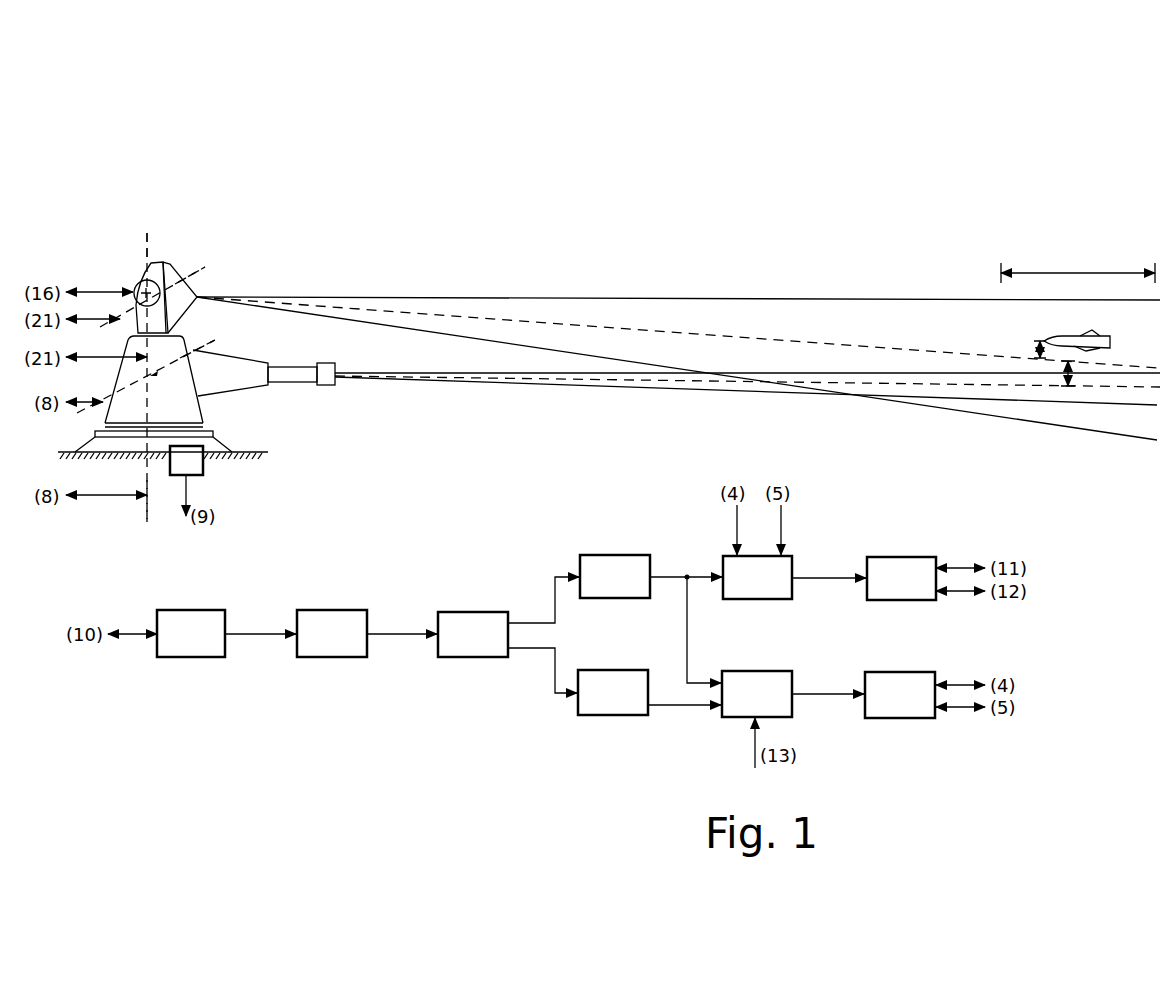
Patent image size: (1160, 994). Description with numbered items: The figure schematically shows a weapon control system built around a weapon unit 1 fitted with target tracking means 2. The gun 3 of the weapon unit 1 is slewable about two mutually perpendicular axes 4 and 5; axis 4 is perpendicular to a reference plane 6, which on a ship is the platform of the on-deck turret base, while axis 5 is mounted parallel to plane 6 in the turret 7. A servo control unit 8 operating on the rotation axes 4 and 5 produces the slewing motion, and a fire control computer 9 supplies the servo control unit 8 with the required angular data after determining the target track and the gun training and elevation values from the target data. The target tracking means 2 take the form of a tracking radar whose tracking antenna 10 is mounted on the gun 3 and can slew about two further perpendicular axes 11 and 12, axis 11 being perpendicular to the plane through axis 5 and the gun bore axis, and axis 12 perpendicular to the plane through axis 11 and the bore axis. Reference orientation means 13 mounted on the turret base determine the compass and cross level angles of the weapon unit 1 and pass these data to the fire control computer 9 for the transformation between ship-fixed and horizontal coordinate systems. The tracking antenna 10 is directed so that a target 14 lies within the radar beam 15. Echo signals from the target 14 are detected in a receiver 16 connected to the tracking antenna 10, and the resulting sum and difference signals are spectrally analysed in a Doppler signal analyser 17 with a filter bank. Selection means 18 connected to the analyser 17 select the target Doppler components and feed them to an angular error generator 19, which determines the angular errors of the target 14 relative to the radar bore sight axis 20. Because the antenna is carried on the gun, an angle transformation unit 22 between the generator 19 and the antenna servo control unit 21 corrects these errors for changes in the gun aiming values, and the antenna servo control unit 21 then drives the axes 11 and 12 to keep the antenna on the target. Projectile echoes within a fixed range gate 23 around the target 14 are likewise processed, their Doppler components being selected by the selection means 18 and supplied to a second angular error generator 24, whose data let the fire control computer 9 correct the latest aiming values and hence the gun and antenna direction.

The weapon unit 1 is at (162, 380).
The target tracking means 2 is at (166, 293).
The gun 3 is at (286, 378).
The axis 4 is at (152, 510).
The axis 5 is at (216, 348).
The reference plane 6 is at (255, 453).
The turret 7 is at (118, 412).
The servo control unit 8 is at (868, 730).
The fire control computer 9 is at (685, 728).
The tracking antenna 10 is at (178, 310).
The axis 11 is at (145, 245).
The axis 12 is at (204, 272).
The reference orientation means 13 is at (196, 465).
The target 14 is at (1103, 335).
The radar beam 15 is at (478, 300).
The receiver 16 is at (141, 597).
The Doppler signal analyser 17 is at (290, 560).
The selection means 18 is at (430, 583).
The angular error generator 19 is at (598, 633).
The radar bore sight axis 20 is at (688, 330).
The antenna servo control unit 21 is at (868, 617).
The angle transformation unit 22 is at (795, 522).
The range gate 23 is at (1078, 269).
The second angular error generator 24 is at (600, 650).